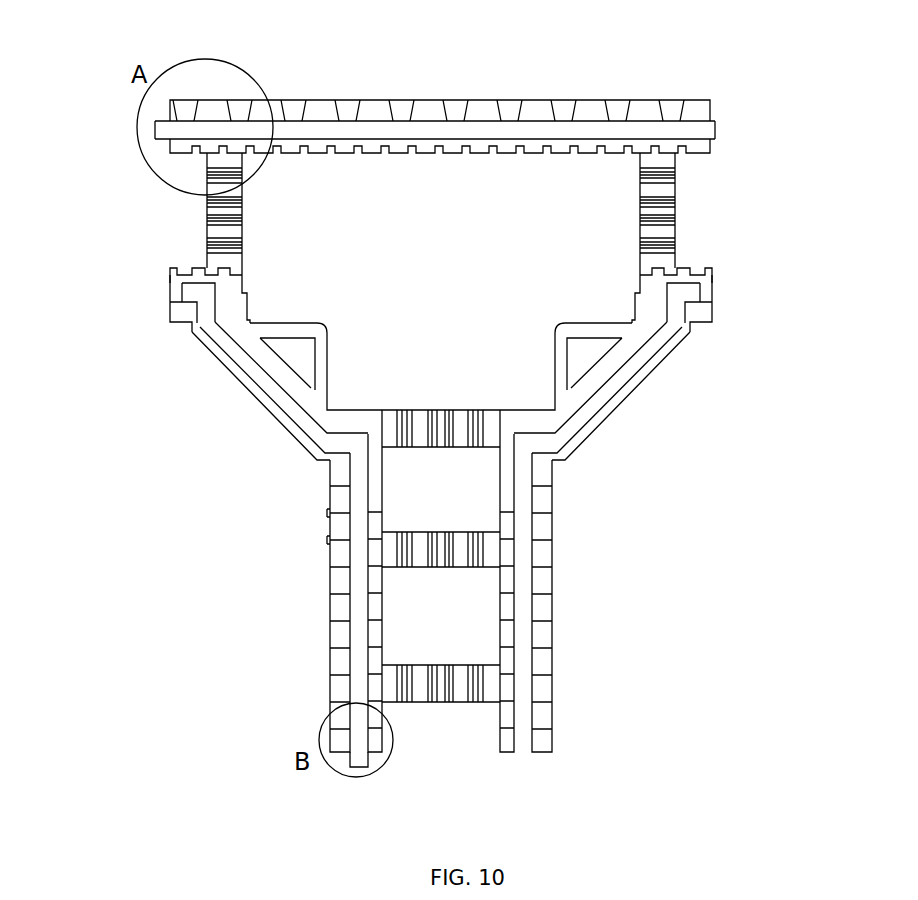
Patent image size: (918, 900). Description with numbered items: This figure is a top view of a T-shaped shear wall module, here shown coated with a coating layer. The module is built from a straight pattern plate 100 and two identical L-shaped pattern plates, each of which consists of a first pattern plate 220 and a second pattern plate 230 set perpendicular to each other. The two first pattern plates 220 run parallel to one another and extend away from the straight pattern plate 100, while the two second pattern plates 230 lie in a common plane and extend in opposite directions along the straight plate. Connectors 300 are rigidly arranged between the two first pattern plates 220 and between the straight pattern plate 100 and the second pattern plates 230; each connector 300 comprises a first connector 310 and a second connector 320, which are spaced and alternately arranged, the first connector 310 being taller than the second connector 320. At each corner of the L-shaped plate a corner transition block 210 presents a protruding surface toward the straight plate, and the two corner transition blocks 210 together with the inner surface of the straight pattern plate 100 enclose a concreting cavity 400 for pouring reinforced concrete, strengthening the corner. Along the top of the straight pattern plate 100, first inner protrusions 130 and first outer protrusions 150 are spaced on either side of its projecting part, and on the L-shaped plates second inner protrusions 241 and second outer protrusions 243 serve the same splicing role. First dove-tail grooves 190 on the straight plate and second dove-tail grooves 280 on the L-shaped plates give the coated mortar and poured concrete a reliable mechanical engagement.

The straight pattern plate 100 is at (413, 103).
The first dove-tail groove 190 is at (457, 100).
The first outer protrusion 150 is at (680, 112).
The first inner protrusion 130 is at (680, 140).
The concreting cavity 400 is at (476, 232).
The first connector 310 is at (227, 230).
The second connector 320 is at (455, 547).
The connector 300 is at (693, 600).
The second pattern plate 230 is at (202, 300).
The corner transition block 210 is at (283, 375).
The first pattern plate 220 is at (345, 548).
The second inner protrusion 241 is at (333, 533).
The second outer protrusion 243 is at (342, 585).
The second dove-tail groove 280 is at (320, 705).